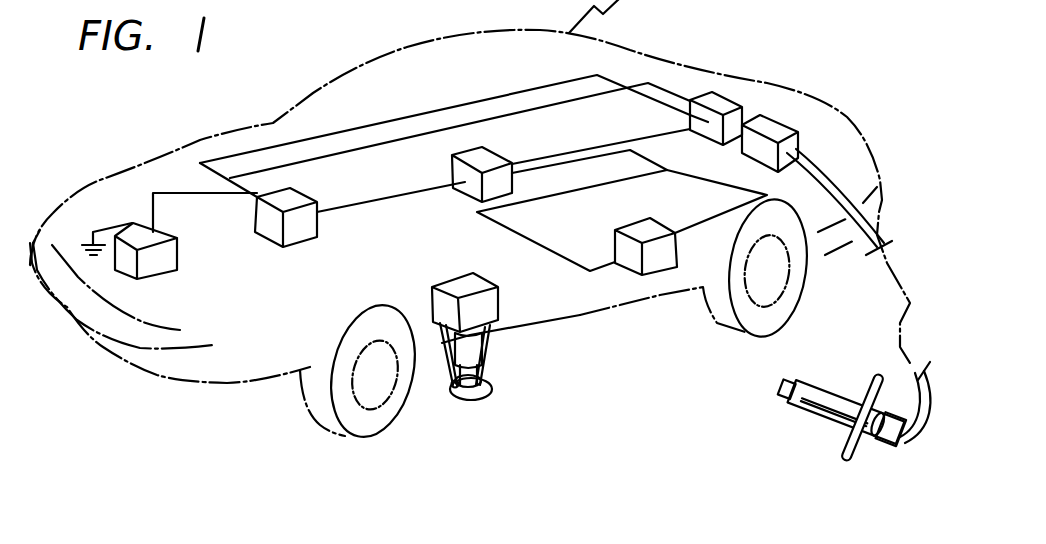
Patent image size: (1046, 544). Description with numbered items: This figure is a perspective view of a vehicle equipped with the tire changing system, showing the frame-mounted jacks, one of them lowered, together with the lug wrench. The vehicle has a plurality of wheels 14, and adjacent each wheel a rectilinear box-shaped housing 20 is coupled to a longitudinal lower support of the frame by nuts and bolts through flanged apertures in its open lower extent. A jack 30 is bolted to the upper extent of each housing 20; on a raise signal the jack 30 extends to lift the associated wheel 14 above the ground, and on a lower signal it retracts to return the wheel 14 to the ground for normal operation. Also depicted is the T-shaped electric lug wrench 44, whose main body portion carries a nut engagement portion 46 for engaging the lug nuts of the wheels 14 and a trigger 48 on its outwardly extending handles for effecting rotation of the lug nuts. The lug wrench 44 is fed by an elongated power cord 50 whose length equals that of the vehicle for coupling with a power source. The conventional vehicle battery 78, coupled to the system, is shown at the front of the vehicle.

The wheels 14 is at (395, 415).
The housings 20 is at (497, 303).
The jacks 30 is at (484, 350).
The electric lug wrench 44 is at (877, 443).
The nut engagement portion 46 is at (813, 417).
The trigger 48 is at (864, 395).
The elongated power cord 50 is at (877, 233).
The vehicle battery 78 is at (158, 265).